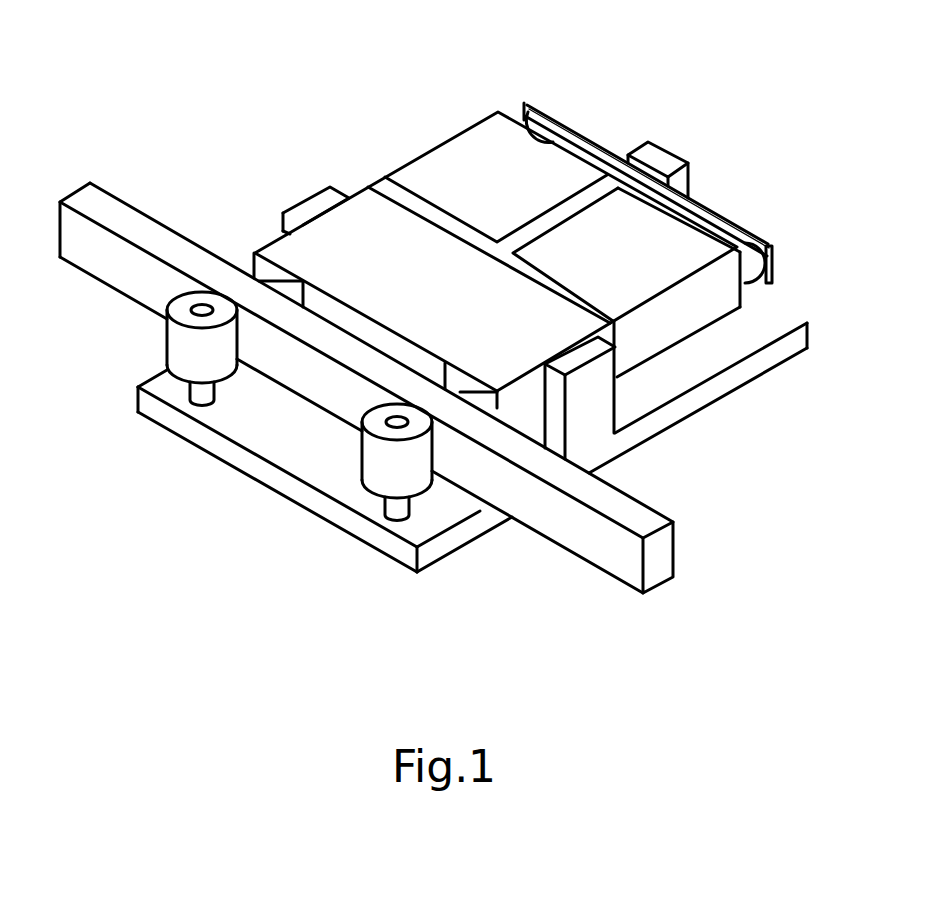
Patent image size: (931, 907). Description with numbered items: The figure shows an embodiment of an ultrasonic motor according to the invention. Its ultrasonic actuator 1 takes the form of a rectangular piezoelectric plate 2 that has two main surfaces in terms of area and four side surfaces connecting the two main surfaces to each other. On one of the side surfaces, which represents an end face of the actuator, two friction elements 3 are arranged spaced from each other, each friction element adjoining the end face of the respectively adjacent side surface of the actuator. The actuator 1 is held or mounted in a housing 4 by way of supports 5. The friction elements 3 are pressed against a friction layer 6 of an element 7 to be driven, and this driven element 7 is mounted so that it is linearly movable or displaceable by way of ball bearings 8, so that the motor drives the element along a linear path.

The ultrasonic actuator 1 is at (495, 152).
The rectangular piezoelectric plate 2 is at (697, 303).
The friction elements 3 is at (262, 270).
The housing 4 is at (281, 436).
The supports 5 is at (563, 341).
The friction layer 6 is at (204, 224).
The element to be driven 7 is at (673, 560).
The ball bearings 8 is at (194, 369).